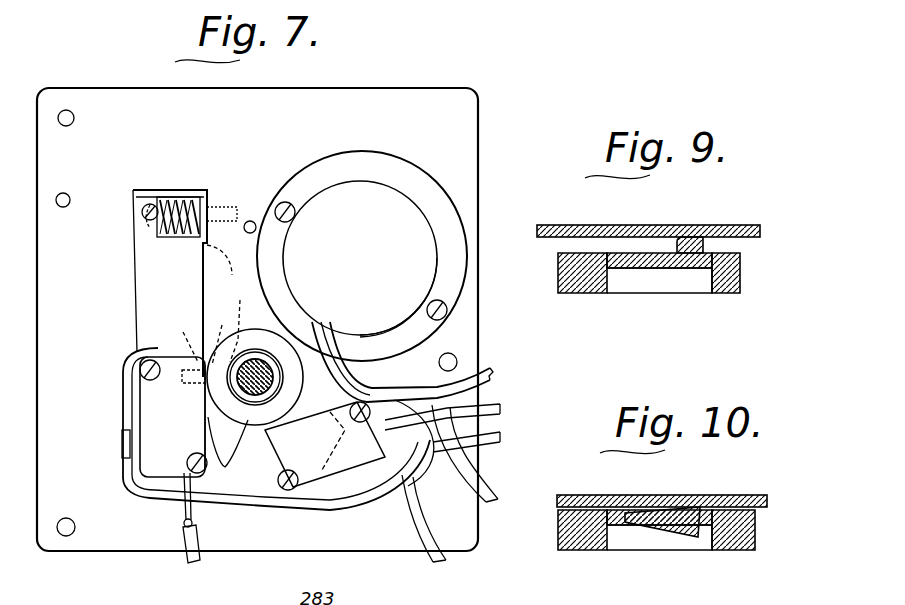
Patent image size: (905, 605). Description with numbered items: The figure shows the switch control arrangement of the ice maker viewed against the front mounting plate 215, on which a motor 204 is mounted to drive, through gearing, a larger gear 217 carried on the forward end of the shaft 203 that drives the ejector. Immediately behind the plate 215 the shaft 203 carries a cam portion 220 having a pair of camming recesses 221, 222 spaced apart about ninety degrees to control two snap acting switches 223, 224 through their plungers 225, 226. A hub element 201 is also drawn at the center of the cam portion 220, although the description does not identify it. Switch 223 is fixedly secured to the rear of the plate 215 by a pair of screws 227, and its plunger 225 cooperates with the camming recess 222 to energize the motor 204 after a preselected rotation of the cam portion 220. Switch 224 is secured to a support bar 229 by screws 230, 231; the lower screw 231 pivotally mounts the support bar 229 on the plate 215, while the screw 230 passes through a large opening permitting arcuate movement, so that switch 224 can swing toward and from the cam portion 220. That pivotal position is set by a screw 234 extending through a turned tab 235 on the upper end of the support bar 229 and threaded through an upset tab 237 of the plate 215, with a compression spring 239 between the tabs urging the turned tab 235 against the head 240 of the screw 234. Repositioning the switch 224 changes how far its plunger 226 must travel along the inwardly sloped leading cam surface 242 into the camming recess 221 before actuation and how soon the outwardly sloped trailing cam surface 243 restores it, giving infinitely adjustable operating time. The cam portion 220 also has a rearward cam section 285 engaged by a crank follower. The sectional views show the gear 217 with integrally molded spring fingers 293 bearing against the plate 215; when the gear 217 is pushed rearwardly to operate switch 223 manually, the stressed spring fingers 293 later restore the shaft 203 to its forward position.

In FIG. 7, the front mounting plate 215 is at (372, 100).
In FIG. 9, the front mounting plate 215 is at (573, 233).
In FIG. 10, the front mounting plate 215 is at (577, 500).
In FIG. 7, the motor 204 is at (393, 192).
In FIG. 7, the support bar 229 is at (142, 268).
In FIG. 7, the compression spring 239 is at (190, 197).
In FIG. 7, the turned tab 235 is at (148, 190).
In FIG. 7, the screw 234 is at (225, 203).
In FIG. 7, the head 240 is at (150, 227).
In FIG. 7, the upset tab 237 is at (227, 260).
In FIG. 7, the trailing cam surface 243 is at (232, 321).
In FIG. 7, the camming recess 221 is at (222, 334).
In FIG. 7, the plunger 226 is at (180, 347).
In FIG. 7, the shaft 201 is at (262, 356).
In FIG. 7, the rearward cam section 285 is at (290, 352).
In FIG. 7, the screws 227 is at (357, 400).
In FIG. 7, the snap acting switch 224 is at (148, 398).
In FIG. 7, the screw 230 is at (145, 366).
In FIG. 7, the lower screw 231 is at (200, 475).
In FIG. 7, the leading cam surface 242 is at (182, 417).
In FIG. 7, the shaft 203 is at (243, 393).
In FIG. 7, the plunger 225 is at (325, 444).
In FIG. 7, the cam portion 220 is at (243, 420).
In FIG. 7, the camming recess 222 is at (268, 440).
In FIG. 7, the snap acting switch 223 is at (328, 473).
In FIG. 9, the spring fingers 293 is at (650, 258).
In FIG. 10, the spring fingers 293 is at (666, 528).
In FIG. 9, the gear 217 is at (727, 253).
In FIG. 10, the gear 217 is at (727, 550).